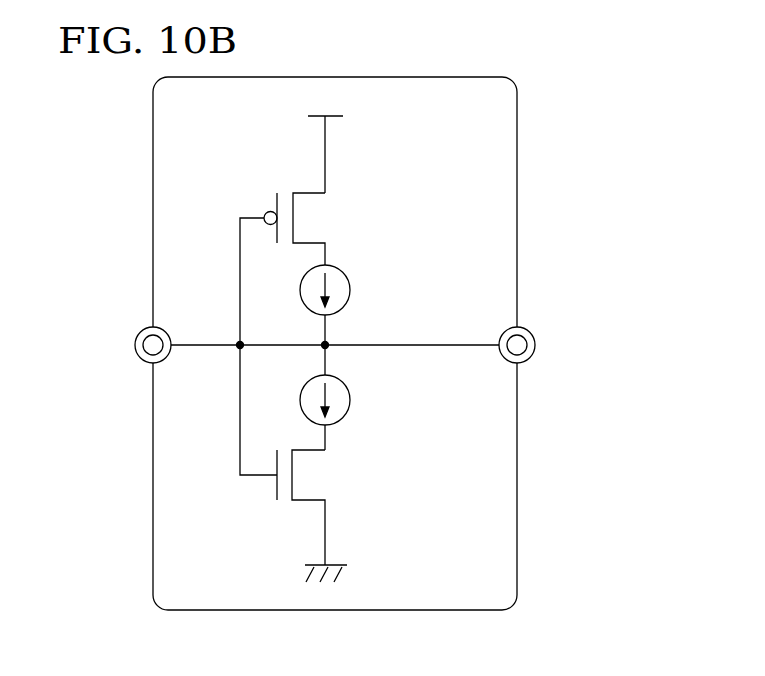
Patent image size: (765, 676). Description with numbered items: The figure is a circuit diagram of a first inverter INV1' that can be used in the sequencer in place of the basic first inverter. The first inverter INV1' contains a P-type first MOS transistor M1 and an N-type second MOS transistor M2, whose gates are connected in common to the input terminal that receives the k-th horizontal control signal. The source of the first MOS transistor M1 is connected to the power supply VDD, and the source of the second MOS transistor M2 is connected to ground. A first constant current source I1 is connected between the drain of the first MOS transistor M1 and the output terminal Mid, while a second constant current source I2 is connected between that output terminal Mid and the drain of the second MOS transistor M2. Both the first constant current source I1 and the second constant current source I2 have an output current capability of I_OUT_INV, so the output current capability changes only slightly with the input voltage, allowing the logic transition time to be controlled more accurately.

The first inverter INV1' is at (390, 343).
The power supply VDD is at (325, 141).
The first MOS transistor M1 is at (282, 262).
The second MOS transistor M2 is at (282, 455).
The first constant current source I1 is at (354, 305).
The second constant current source I2 is at (354, 397).
The intermediate output terminal Mid is at (543, 345).